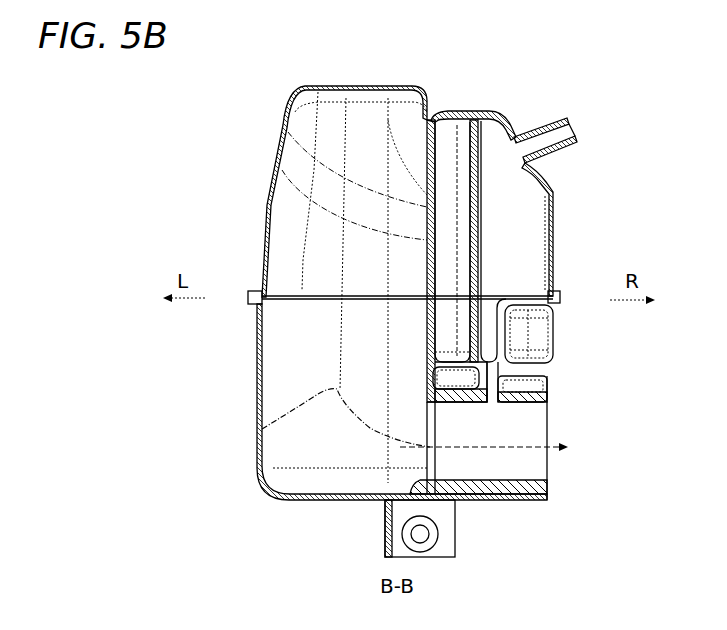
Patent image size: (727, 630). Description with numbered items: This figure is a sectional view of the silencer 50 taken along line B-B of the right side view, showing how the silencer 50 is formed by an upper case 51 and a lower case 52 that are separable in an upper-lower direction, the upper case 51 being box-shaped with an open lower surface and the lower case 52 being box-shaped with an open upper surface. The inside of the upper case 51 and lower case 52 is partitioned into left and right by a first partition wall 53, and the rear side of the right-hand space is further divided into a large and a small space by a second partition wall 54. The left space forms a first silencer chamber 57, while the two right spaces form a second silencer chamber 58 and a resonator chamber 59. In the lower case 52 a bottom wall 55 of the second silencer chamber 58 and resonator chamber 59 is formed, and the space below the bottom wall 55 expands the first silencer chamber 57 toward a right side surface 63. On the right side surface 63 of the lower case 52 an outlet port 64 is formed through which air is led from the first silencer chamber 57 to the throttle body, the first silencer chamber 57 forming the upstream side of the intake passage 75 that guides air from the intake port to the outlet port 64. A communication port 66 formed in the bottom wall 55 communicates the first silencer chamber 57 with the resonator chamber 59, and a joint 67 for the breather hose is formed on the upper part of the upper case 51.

The silencer 50 is at (286, 70).
The upper case 51 is at (264, 203).
The lower case 52 is at (258, 362).
The first partition wall 53 is at (426, 188).
The second partition wall 54 is at (480, 277).
The bottom wall 55 is at (437, 400).
The first silencer chamber 57 is at (378, 352).
The second silencer chamber 58 is at (464, 228).
The resonator chamber 59 is at (514, 228).
The right side surface 63 is at (549, 388).
The outlet port 64 is at (549, 414).
The communication port 66 is at (488, 394).
The joint 67 is at (548, 126).
The intake passage 75 is at (264, 429).